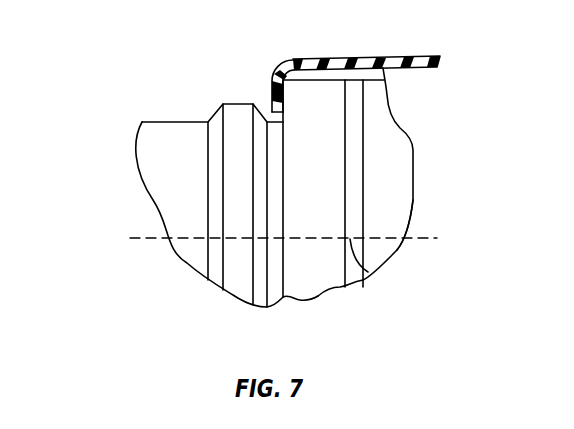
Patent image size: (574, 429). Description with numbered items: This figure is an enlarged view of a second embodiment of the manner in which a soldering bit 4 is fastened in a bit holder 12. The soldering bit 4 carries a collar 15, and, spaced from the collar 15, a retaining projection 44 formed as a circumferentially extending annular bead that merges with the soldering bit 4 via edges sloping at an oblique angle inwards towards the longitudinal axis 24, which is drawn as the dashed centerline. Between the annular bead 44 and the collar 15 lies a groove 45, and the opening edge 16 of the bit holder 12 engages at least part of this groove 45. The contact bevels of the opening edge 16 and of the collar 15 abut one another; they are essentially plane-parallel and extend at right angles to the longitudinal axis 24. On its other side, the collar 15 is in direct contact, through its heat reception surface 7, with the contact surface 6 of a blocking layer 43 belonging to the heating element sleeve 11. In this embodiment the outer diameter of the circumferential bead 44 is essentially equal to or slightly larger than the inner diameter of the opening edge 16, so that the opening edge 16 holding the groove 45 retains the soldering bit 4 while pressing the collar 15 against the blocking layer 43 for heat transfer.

The soldering bit 4 is at (130, 185).
The contact surface 6 is at (339, 98).
The heat reception surface 7 is at (352, 120).
The heating element sleeve 11 is at (397, 212).
The bit holder 12 is at (362, 57).
The collar 15 is at (303, 176).
The opening edge 16 is at (272, 83).
The longitudinal axis 24 is at (367, 271).
The blocking layer 43 is at (353, 177).
The retaining projection 44 is at (238, 183).
The groove 45 is at (273, 256).